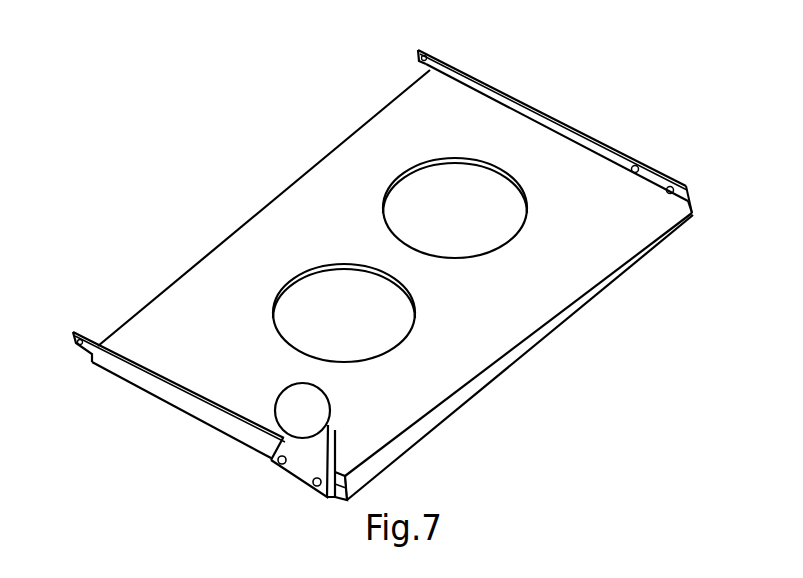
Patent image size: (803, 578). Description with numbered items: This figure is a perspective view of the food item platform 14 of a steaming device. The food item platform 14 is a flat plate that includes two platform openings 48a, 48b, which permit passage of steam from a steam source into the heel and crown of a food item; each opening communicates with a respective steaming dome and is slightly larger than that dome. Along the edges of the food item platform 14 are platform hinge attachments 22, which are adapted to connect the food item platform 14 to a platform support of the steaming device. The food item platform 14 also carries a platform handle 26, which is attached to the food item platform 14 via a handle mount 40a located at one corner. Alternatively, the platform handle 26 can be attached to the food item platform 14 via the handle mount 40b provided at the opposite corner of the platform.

The food item platform 14 is at (228, 270).
The platform hinge attachments 22 is at (419, 50).
The platform handle 26 is at (292, 408).
The handle mount 40a is at (316, 488).
The handle mount 40b is at (671, 187).
The platform opening 48a is at (338, 303).
The platform opening 48b is at (462, 207).